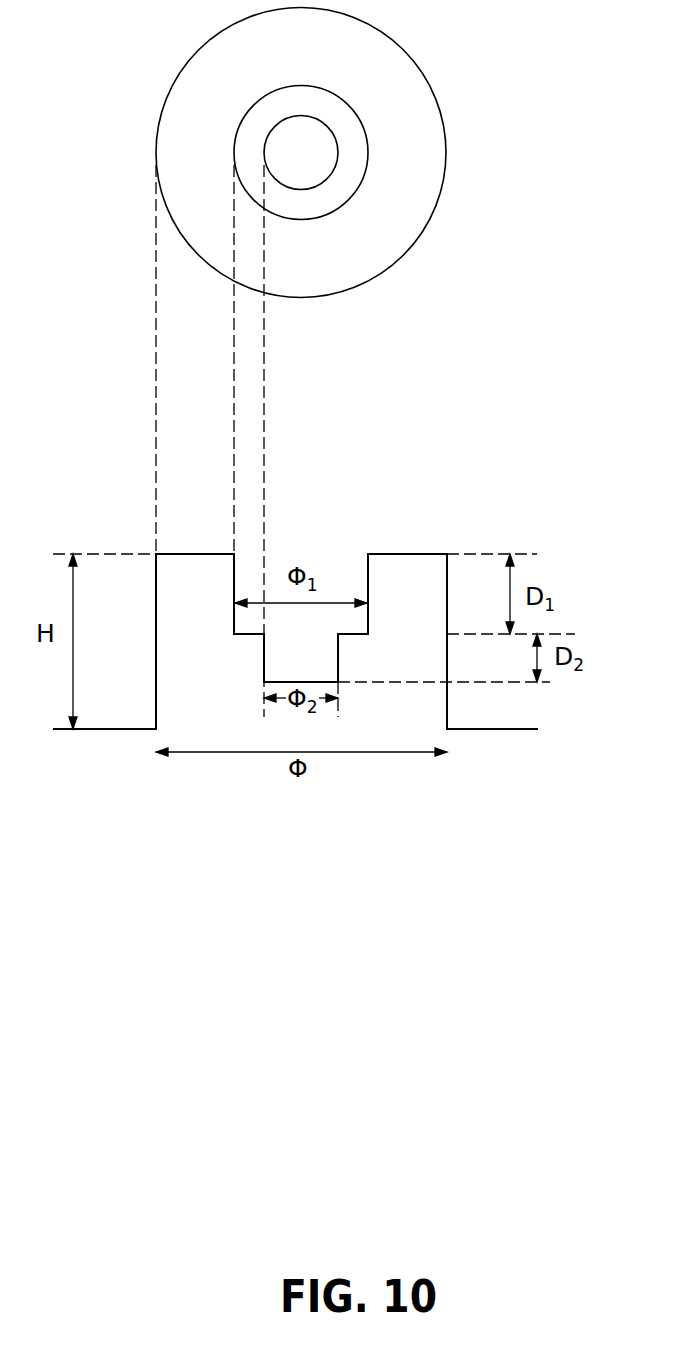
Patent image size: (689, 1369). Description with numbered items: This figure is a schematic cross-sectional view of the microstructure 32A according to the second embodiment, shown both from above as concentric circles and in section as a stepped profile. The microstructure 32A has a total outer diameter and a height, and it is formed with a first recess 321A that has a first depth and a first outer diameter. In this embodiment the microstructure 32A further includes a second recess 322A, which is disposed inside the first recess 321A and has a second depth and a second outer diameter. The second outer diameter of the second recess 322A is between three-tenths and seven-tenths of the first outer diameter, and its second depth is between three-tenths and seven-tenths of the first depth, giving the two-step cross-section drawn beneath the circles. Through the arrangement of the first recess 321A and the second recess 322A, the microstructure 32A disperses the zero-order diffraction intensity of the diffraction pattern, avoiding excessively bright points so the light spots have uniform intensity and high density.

The microstructure 32A is at (446, 154).
The first recess 321A is at (368, 154).
The second recess 322A is at (300, 190).